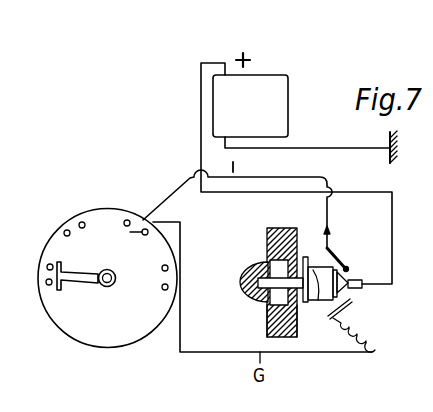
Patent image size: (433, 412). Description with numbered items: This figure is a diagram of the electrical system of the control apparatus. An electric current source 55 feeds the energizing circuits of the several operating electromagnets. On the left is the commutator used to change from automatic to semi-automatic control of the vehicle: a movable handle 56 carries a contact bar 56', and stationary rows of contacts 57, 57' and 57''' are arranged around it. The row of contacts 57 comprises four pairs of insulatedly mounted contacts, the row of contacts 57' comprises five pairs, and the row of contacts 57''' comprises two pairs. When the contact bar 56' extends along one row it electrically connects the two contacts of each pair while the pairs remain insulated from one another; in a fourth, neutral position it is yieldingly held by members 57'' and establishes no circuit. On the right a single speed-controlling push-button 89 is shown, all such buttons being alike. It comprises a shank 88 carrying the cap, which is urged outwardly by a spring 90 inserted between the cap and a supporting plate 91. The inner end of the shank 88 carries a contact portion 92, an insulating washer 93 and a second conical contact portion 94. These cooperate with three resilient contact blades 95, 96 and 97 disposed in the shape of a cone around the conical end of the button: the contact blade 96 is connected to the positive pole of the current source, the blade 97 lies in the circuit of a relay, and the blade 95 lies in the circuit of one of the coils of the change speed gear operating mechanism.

The electric current source 55 is at (270, 101).
The movable handle 56 is at (102, 292).
The contact bar 56' is at (85, 288).
The row of contacts 57 is at (40, 236).
The row of contacts 57' is at (129, 237).
The members 57'' is at (192, 266).
The row of contacts 57''' is at (56, 194).
The shank 88 is at (275, 230).
The push-button 89 is at (255, 262).
The spring 90 is at (271, 306).
The supporting plate 91 is at (267, 321).
The contact portion 92 is at (310, 267).
The insulating washer 93 is at (346, 272).
The second conical contact portion 94 is at (348, 265).
The resilient contact blade 95 is at (331, 250).
The resilient contact blade 96 is at (362, 283).
The resilient contact blade 97 is at (348, 310).